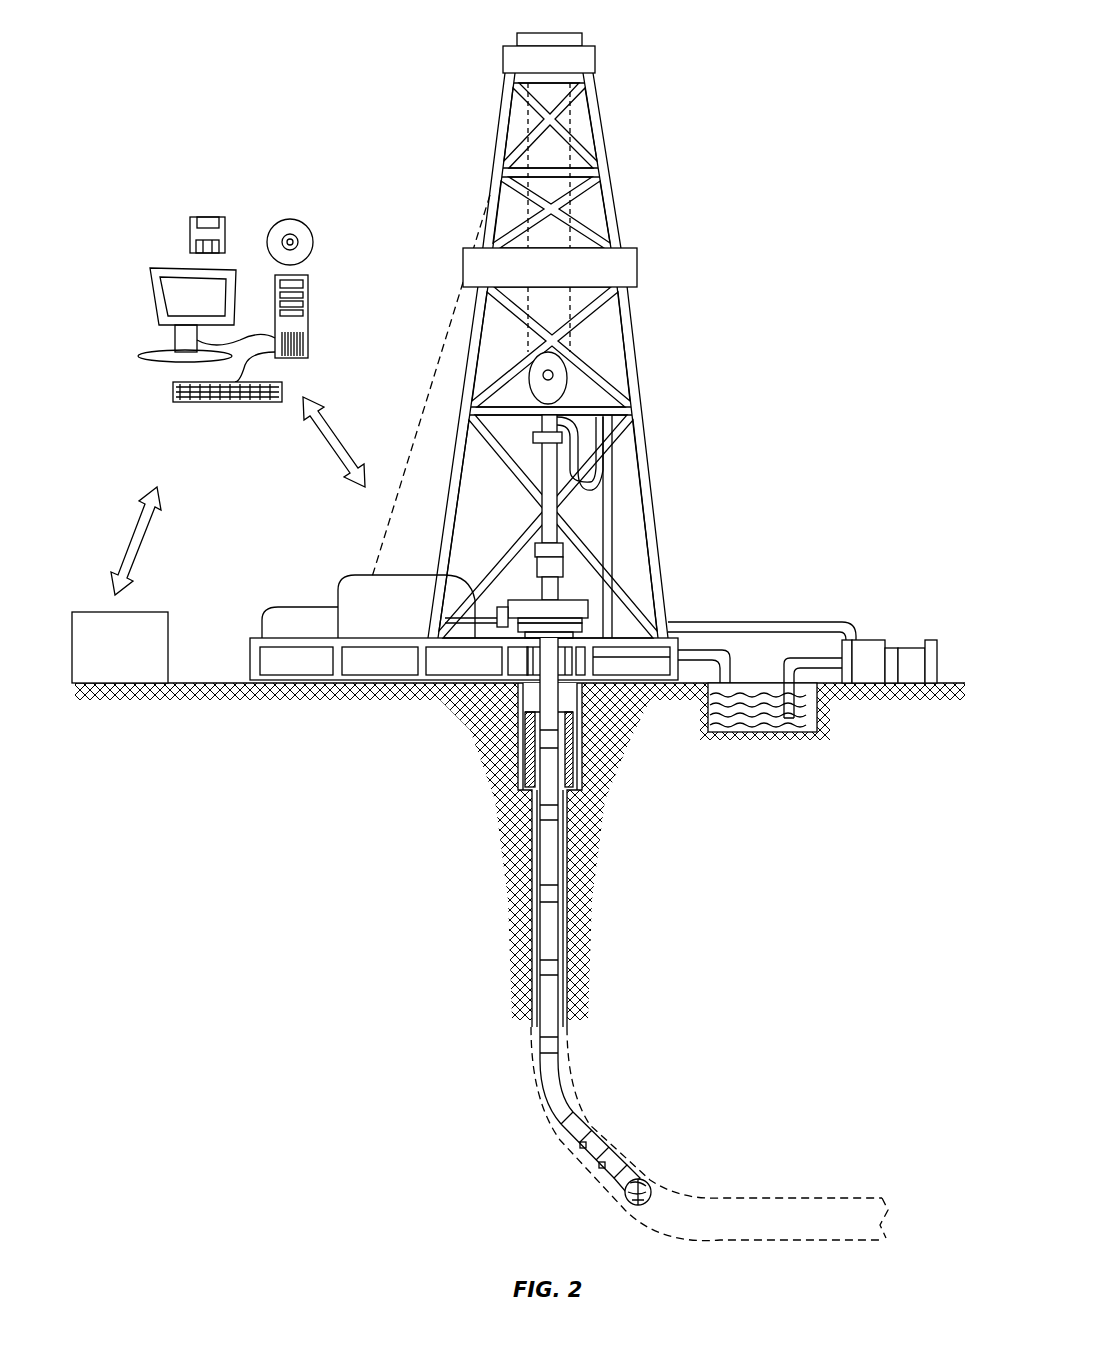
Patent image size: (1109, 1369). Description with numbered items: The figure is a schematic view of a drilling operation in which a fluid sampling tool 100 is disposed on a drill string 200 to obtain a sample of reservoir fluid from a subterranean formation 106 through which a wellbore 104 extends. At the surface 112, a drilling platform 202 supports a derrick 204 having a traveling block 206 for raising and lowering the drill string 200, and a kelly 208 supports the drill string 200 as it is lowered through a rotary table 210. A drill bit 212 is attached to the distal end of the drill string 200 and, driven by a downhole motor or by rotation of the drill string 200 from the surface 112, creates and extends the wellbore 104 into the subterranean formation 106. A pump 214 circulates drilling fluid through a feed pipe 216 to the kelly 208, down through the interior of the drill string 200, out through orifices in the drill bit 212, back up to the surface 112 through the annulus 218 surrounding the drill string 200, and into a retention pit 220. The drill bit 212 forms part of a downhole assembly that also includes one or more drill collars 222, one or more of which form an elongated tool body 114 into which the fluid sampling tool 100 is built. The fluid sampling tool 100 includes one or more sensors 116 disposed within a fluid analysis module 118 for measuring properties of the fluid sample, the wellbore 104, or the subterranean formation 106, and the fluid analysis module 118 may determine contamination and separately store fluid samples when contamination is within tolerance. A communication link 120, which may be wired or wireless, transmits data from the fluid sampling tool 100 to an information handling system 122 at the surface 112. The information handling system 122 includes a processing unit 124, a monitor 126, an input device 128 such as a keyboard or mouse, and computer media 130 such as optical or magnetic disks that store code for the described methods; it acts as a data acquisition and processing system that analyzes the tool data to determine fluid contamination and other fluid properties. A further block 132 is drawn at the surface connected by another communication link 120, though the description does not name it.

The fluid sampling tool 100 is at (601, 1141).
The wellbore 104 is at (570, 890).
The subterranean formation 106 is at (795, 976).
The surface 112 is at (950, 683).
The tool body 114 is at (585, 1138).
The sensors 116 is at (600, 1170).
The fluid analysis module 118 is at (578, 1148).
The communication link 120 is at (327, 445).
The information handling system 122 is at (152, 203).
The processing unit 124 is at (310, 285).
The monitor 126 is at (155, 305).
The input device 128 is at (182, 405).
The computer media 130 is at (285, 218).
The control unit 132 is at (138, 659).
The drill string 200 is at (560, 870).
The drilling platform 202 is at (250, 660).
The derrick 204 is at (610, 188).
The traveling block 206 is at (568, 378).
The kelly 208 is at (552, 463).
The rotary table 210 is at (592, 600).
The drill bit 212 is at (650, 1178).
The pump 214 is at (868, 640).
The feed pipe 216 is at (790, 622).
The annulus 218 is at (530, 888).
The retention pit 220 is at (757, 717).
The drill collars 222 is at (600, 1150).